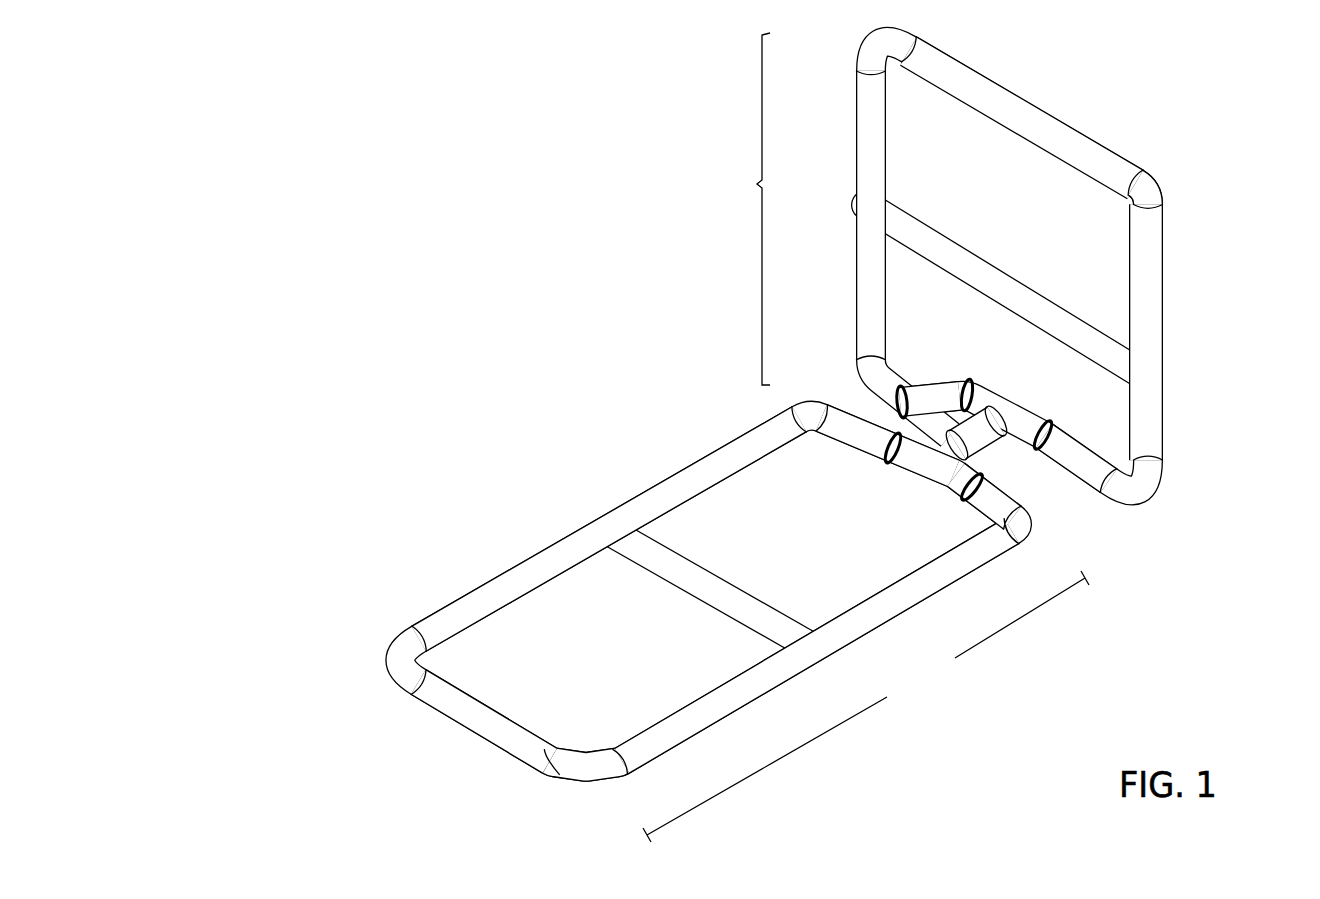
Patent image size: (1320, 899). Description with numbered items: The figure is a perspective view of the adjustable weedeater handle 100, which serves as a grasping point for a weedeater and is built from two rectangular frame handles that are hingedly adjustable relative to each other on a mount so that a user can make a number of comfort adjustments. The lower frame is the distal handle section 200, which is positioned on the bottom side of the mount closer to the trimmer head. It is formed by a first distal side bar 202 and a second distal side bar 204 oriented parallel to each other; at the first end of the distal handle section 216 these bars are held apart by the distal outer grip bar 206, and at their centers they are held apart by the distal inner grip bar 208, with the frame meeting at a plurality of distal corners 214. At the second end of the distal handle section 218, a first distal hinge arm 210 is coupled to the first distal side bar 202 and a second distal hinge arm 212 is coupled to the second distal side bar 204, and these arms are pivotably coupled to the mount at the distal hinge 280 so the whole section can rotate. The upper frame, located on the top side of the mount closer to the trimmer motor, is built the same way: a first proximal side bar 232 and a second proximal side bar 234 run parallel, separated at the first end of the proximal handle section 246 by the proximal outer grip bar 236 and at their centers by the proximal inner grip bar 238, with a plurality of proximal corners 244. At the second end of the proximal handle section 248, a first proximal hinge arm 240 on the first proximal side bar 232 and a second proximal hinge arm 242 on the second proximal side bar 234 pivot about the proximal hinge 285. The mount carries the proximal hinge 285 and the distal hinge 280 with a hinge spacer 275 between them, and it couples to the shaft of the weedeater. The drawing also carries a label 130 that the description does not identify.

The adjustable weedeater handle 100 is at (484, 157).
The upper frame 130 is at (757, 184).
The distal handle section 200 is at (866, 706).
The first distal side bar 202 is at (735, 692).
The second distal side bar 204 is at (490, 595).
The distal outer grip bar 206 is at (495, 733).
The distal inner grip bar 208 is at (690, 590).
The first distal hinge arm 210 is at (965, 492).
The second distal hinge arm 212 is at (868, 435).
The distal corners 214 is at (576, 778).
The first end of the distal handle section 216 is at (355, 655).
The second end of the distal handle section 218 is at (1108, 578).
The first proximal side bar 232 is at (1165, 385).
The second proximal side bar 234 is at (868, 130).
The proximal outer grip bar 236 is at (1003, 118).
The proximal inner grip bar 238 is at (985, 255).
The first proximal hinge arm 240 is at (1058, 437).
The second proximal hinge arm 242 is at (940, 400).
The proximal corners 244 is at (1138, 182).
The first end of the proximal handle section 246 is at (1178, 212).
The second end of the proximal handle section 248 is at (1178, 538).
The hinge spacer 275 is at (913, 452).
The distal hinge 280 is at (972, 395).
The proximal hinge 285 is at (880, 448).